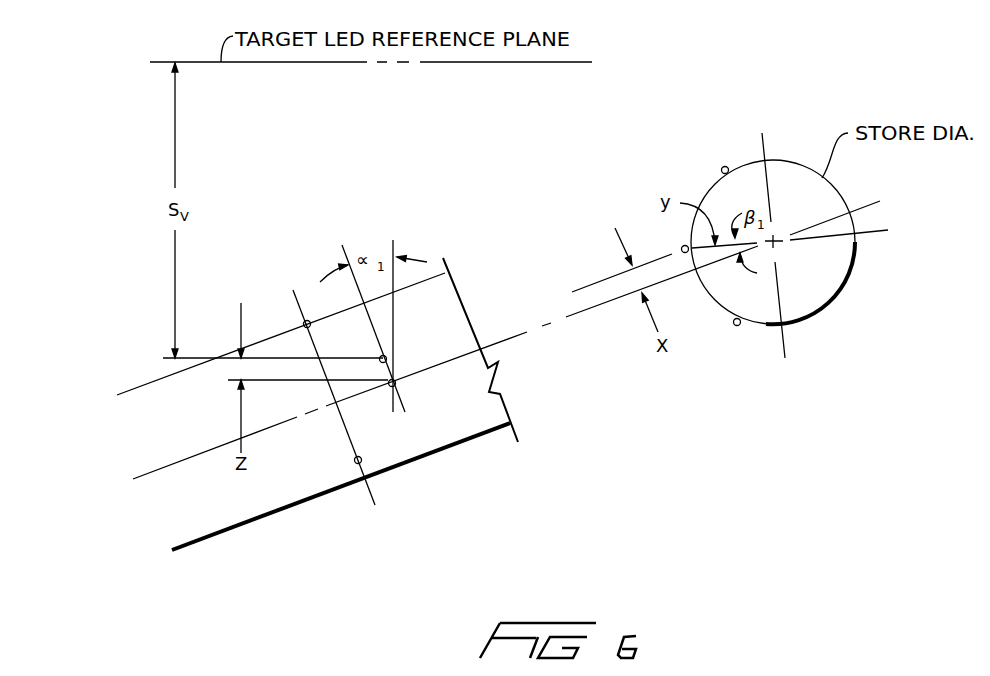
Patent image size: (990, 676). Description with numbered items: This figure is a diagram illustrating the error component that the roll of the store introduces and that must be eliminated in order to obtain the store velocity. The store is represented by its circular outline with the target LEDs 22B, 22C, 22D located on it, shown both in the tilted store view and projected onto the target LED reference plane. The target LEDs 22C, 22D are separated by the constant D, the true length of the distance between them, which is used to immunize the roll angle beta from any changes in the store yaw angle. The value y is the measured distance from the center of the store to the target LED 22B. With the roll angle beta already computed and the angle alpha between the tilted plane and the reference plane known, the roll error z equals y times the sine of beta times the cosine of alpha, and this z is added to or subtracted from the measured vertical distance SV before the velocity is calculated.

The target LED 22B is at (396, 383).
The target LED 22C is at (494, 236).
The target LED 22D is at (549, 391).